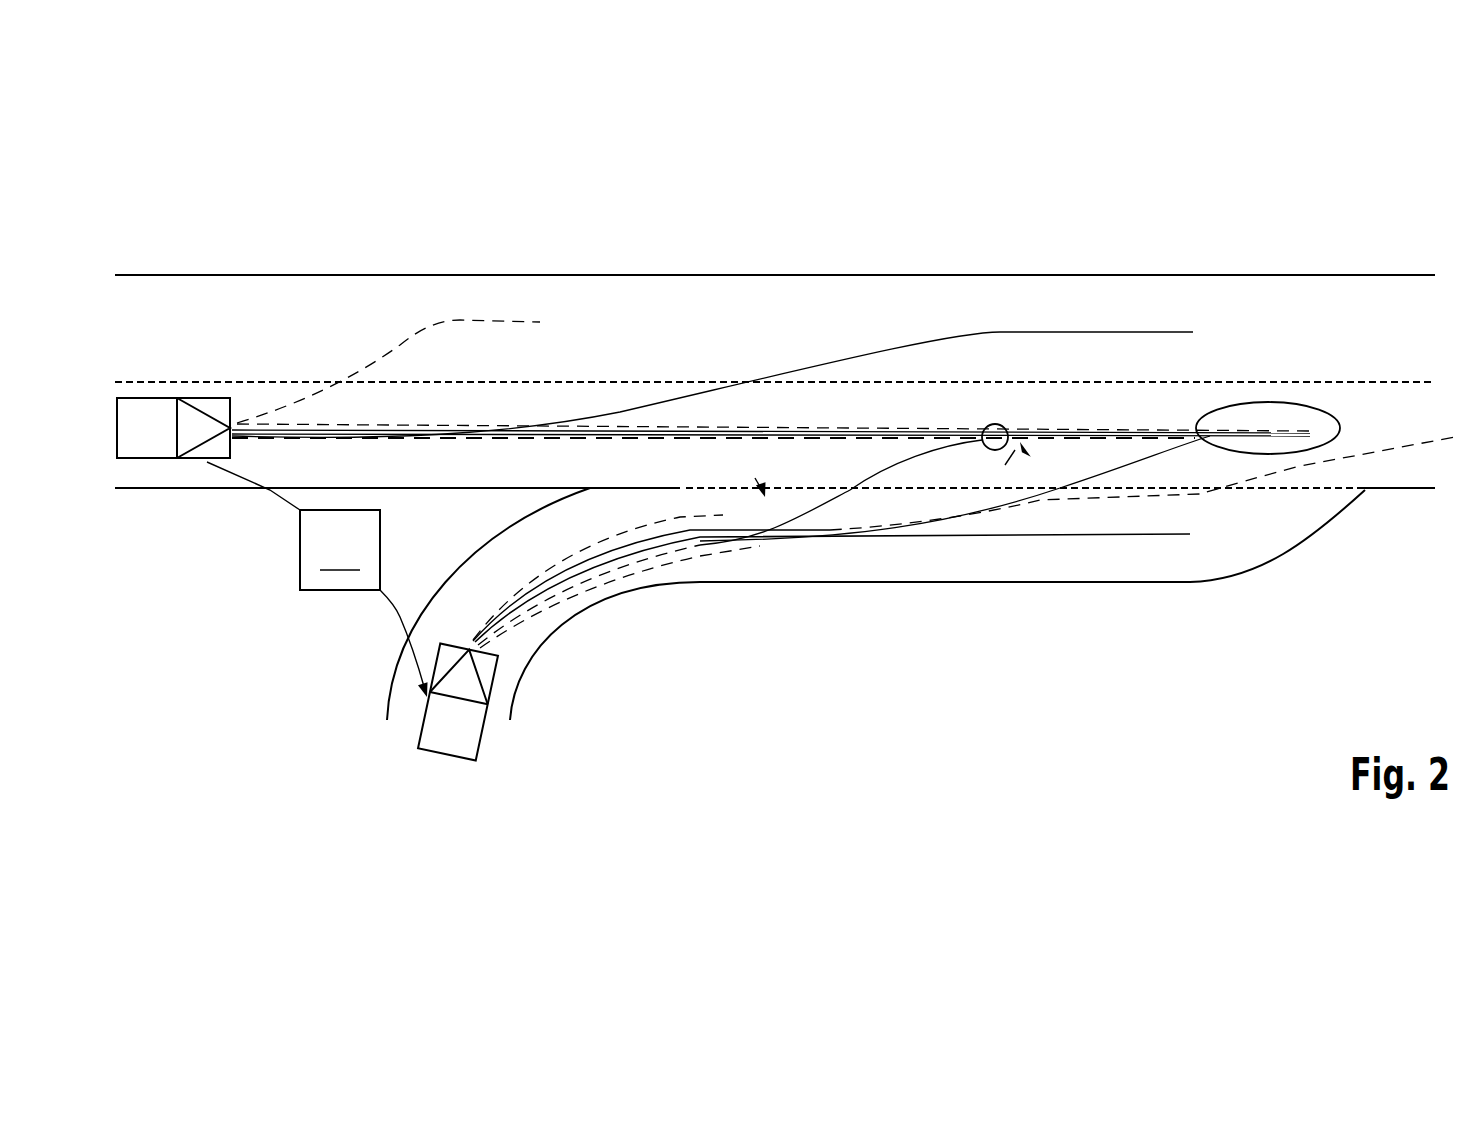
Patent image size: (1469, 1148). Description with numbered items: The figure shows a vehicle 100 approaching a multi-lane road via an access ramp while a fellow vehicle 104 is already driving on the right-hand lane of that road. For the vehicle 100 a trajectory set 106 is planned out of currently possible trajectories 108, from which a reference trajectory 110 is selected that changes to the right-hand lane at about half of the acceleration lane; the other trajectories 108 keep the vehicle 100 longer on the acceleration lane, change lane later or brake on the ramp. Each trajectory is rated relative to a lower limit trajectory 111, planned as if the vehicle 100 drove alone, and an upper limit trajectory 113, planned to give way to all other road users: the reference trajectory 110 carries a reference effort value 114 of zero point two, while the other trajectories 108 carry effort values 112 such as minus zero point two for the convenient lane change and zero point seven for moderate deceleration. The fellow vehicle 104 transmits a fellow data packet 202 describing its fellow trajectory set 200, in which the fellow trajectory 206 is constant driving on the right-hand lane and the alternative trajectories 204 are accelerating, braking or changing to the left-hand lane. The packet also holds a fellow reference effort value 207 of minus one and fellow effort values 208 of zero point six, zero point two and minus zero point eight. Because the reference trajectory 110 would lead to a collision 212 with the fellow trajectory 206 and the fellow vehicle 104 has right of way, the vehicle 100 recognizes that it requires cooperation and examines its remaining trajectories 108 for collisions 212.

The vehicle 100 is at (483, 737).
The fellow vehicle 104 is at (160, 398).
The trajectory set 106 is at (768, 668).
The trajectories 108 is at (975, 540).
The reference trajectory 110 is at (907, 462).
The lower limit trajectory 111 is at (803, 438).
The effort value 112 is at (1187, 437).
The upper limit trajectory 113 is at (370, 378).
The reference effort value 114 is at (1030, 437).
The fellow trajectory set 200 is at (618, 322).
The fellow data packet 202 is at (317, 579).
The alternative trajectories 204 is at (545, 427).
The fellow trajectory 206 is at (777, 442).
The fellow reference effort value 207 is at (829, 285).
The fellow effort values 208 is at (1175, 282).
The collision 212 is at (1000, 423).